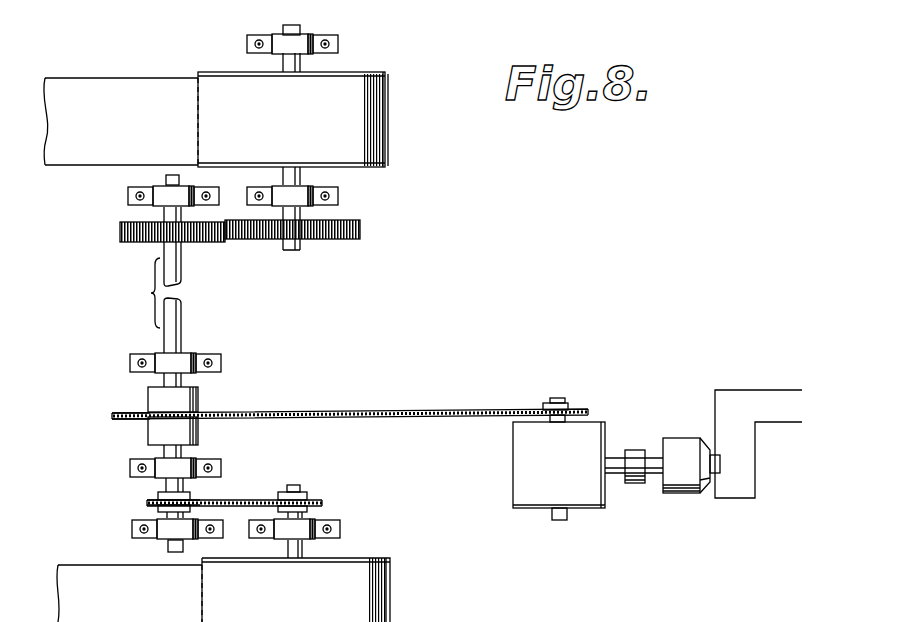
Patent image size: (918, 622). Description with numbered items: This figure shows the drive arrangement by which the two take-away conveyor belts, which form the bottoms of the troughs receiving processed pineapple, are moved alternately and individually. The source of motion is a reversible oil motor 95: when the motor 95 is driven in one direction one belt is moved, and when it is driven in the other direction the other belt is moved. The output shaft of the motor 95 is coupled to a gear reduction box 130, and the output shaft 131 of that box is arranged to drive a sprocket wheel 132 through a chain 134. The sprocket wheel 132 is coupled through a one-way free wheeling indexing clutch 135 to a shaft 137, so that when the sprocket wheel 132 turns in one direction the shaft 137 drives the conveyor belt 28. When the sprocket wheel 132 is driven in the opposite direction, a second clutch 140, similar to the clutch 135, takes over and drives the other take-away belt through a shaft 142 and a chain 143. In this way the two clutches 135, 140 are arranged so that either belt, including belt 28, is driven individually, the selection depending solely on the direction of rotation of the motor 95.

The endless conveyor belt 28 is at (85, 154).
The shaft 137 is at (182, 283).
The one-way free wheeling indexing clutch 135 is at (148, 395).
The clutch 140 is at (148, 432).
The sprocket wheel 132 is at (112, 416).
The chain 134 is at (353, 419).
The shaft 142 is at (147, 502).
The chain 143 is at (240, 500).
The output shaft 131 is at (568, 405).
The gear reduction box 130 is at (598, 433).
The oil motor 95 is at (690, 493).